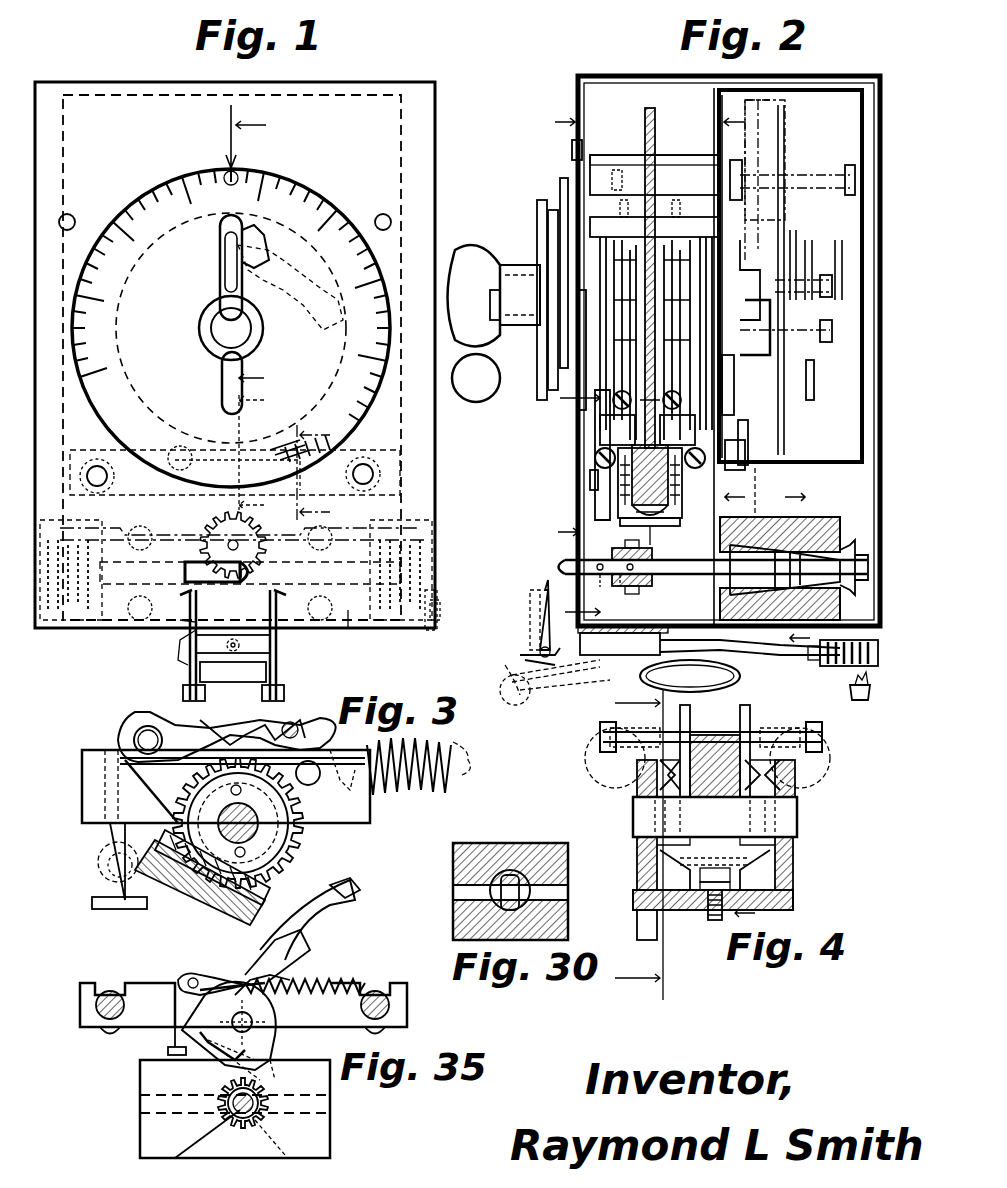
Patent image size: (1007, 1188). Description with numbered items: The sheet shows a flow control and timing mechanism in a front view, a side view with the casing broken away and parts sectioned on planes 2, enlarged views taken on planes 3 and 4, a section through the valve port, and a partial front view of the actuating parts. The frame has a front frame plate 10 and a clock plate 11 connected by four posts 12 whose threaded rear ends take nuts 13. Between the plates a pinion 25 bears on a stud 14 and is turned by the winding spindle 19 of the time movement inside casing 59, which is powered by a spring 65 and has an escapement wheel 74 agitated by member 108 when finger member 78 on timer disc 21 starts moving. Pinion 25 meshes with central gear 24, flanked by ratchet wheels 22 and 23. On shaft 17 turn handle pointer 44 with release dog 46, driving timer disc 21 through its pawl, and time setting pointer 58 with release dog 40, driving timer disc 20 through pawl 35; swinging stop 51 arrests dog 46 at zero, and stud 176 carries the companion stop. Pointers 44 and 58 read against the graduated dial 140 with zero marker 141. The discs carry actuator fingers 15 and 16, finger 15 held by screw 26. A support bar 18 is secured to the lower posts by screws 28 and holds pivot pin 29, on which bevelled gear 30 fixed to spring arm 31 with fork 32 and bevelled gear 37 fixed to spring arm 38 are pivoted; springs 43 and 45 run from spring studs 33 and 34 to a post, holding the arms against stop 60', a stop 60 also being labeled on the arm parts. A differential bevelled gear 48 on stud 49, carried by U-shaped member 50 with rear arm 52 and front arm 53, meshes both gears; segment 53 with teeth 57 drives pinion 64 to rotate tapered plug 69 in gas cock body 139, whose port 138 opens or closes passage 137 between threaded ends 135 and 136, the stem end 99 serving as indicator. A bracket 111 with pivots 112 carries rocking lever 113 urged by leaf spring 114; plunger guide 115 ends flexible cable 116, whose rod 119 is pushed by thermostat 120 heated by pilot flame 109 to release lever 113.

In FIG. 1, the front frame plate 10 is at (45, 84).
In FIG. 2, the front frame plate 10 is at (578, 84).
In FIG. 1, the clock plate 11 is at (85, 95).
In FIG. 2, the clock plate 11 is at (712, 95).
In FIG. 1, the posts 12 is at (67, 214).
In FIG. 2, the posts 12 is at (654, 320).
In FIG. 2, the nuts 13 is at (745, 452).
In FIG. 2, the stud 14 is at (582, 170).
In FIG. 2, the actuator finger 15 is at (600, 425).
In FIG. 3, the actuator finger 15 is at (292, 735).
In FIG. 2, the actuator finger 16 is at (748, 428).
In FIG. 2, the shaft 17 is at (530, 290).
In FIG. 2, the support bar 18 is at (652, 540).
In FIG. 3, the support bar 18 is at (88, 787).
In FIG. 35, the support bar 18 is at (88, 998).
In FIG. 2, the winding spindle 19 is at (760, 175).
In FIG. 2, the timer disc 20 is at (600, 380).
In FIG. 3, the timer disc 20 is at (345, 895).
In FIG. 2, the timer disc 21 is at (740, 355).
In FIG. 1, the ratchet toothed wheel 22 is at (265, 251).
In FIG. 2, the ratchet toothed wheel 23 is at (550, 326).
In FIG. 2, the central gear 24 is at (652, 230).
In FIG. 2, the pinion 25 is at (650, 112).
In FIG. 35, the screw 26 is at (330, 983).
In FIG. 35, the screws 28 is at (105, 1030).
In FIG. 1, the pivot pin 29 is at (195, 468).
In FIG. 3, the pivot pin 29 is at (290, 826).
In FIG. 35, the pivot pin 29 is at (250, 1025).
In FIG. 4, the pivot pin 29 is at (798, 814).
In FIG. 2, the bevelled gear 30 is at (635, 510).
In FIG. 3, the bevelled gear 30 is at (290, 842).
In FIG. 35, the bevelled gear 30 is at (278, 1008).
In FIG. 4, the bevelled gear 30 is at (635, 796).
In FIG. 3, the spring arm 31 is at (118, 740).
In FIG. 35, the spring arm 31 is at (188, 978).
In FIG. 2, the fork 32 is at (781, 376).
In FIG. 3, the fork 32 is at (275, 730).
In FIG. 35, the fork 32 is at (248, 978).
In FIG. 3, the spring stud 33 is at (118, 748).
In FIG. 35, the spring stud 33 is at (195, 978).
In FIG. 4, the spring stud 33 is at (722, 735).
In FIG. 4, the spring stud 34 is at (822, 738).
In FIG. 2, the pawl 35 is at (583, 503).
In FIG. 4, the bevelled gear 37 is at (797, 786).
In FIG. 4, the spring arm 38 is at (752, 730).
In FIG. 2, the release dog 40 is at (478, 378).
In FIG. 3, the spring 43 is at (140, 740).
In FIG. 35, the spring 43 is at (368, 982).
In FIG. 4, the spring 43 is at (600, 770).
In FIG. 1, the handle pointer 44 is at (222, 222).
In FIG. 2, the handle pointer 44 is at (494, 295).
In FIG. 4, the spring 45 is at (820, 772).
In FIG. 2, the release dog 46 is at (735, 390).
In FIG. 2, the bevelled gear 48 is at (655, 576).
In FIG. 3, the bevelled gear 48 is at (245, 888).
In FIG. 4, the bevelled gear 48 is at (705, 905).
In FIG. 3, the stud 49 is at (185, 908).
In FIG. 4, the stud 49 is at (722, 912).
In FIG. 2, the U-shaped member 50 is at (665, 522).
In FIG. 3, the U-shaped member 50 is at (235, 905).
In FIG. 35, the U-shaped member 50 is at (275, 1068).
In FIG. 4, the U-shaped member 50 is at (793, 896).
In FIG. 2, the swinging stop 51 is at (740, 440).
In FIG. 4, the rear arm 52 is at (795, 872).
In FIG. 2, the front arm 53 is at (630, 520).
In FIG. 4, the front arm 53 is at (637, 858).
In FIG. 1, the teeth 57 is at (175, 510).
In FIG. 35, the teeth 57 is at (205, 1070).
In FIG. 1, the time setting pointer 58 is at (269, 235).
In FIG. 2, the time setting pointer 58 is at (558, 185).
In FIG. 2, the casing 59 is at (862, 92).
In FIG. 3, the stop 60 is at (94, 898).
In FIG. 35, the stop 60 is at (145, 1049).
In FIG. 3, the stop 60' is at (328, 757).
In FIG. 2, the pinion 64 is at (612, 556).
In FIG. 35, the pinion 64 is at (185, 1152).
In FIG. 2, the spring 65 is at (790, 190).
In FIG. 2, the tapered plug 69 is at (779, 568).
In FIG. 35, the tapered plug 69 is at (283, 1158).
In FIG. 30, the tapered plug 69 is at (515, 875).
In FIG. 2, the wheel 74 is at (800, 300).
In FIG. 2, the finger member 78 is at (700, 332).
In FIG. 1, the valve stem end 99 is at (190, 572).
In FIG. 2, the valve stem end 99 is at (555, 567).
In FIG. 2, the agitating member 108 is at (812, 400).
In FIG. 2, the pilot flame 109 is at (850, 695).
In FIG. 1, the bracket 111 is at (188, 630).
In FIG. 2, the bracket 111 is at (650, 655).
In FIG. 1, the pivots 112 is at (196, 648).
In FIG. 2, the pivots 112 is at (540, 652).
In FIG. 1, the rocking lever 113 is at (200, 670).
In FIG. 2, the rocking lever 113 is at (540, 607).
In FIG. 1, the leaf spring 114 is at (262, 693).
In FIG. 2, the leaf spring 114 is at (520, 692).
In FIG. 2, the plunger guide 115 is at (623, 641).
In FIG. 2, the flexible cable 116 is at (699, 676).
In FIG. 1, the rod 119 is at (180, 650).
In FIG. 2, the rod 119 is at (570, 672).
In FIG. 2, the thermostat 120 is at (826, 668).
In FIG. 1, the internally threaded end 135 is at (60, 600).
In FIG. 1, the internally threaded end 136 is at (435, 610).
In FIG. 1, the connecting passage 137 is at (430, 600).
In FIG. 30, the connecting passage 137 is at (565, 860).
In FIG. 30, the port 138 is at (505, 878).
In FIG. 1, the gas cock body 139 is at (349, 628).
In FIG. 2, the gas cock body 139 is at (760, 480).
In FIG. 35, the gas cock body 139 is at (150, 1126).
In FIG. 30, the gas cock body 139 is at (458, 862).
In FIG. 1, the graduated time-determining dial 140 is at (140, 190).
In FIG. 2, the graduated time-determining dial 140 is at (578, 430).
In FIG. 1, the zero marker 141 is at (244, 160).
In FIG. 2, the zero marker 141 is at (570, 147).
In FIG. 2, the stud 176 is at (585, 488).
In FIG. 1, the section plane 2 is at (316, 467).
In FIG. 2, the section plane 3 is at (637, 845).
In FIG. 1, the section plane 4 is at (260, 455).